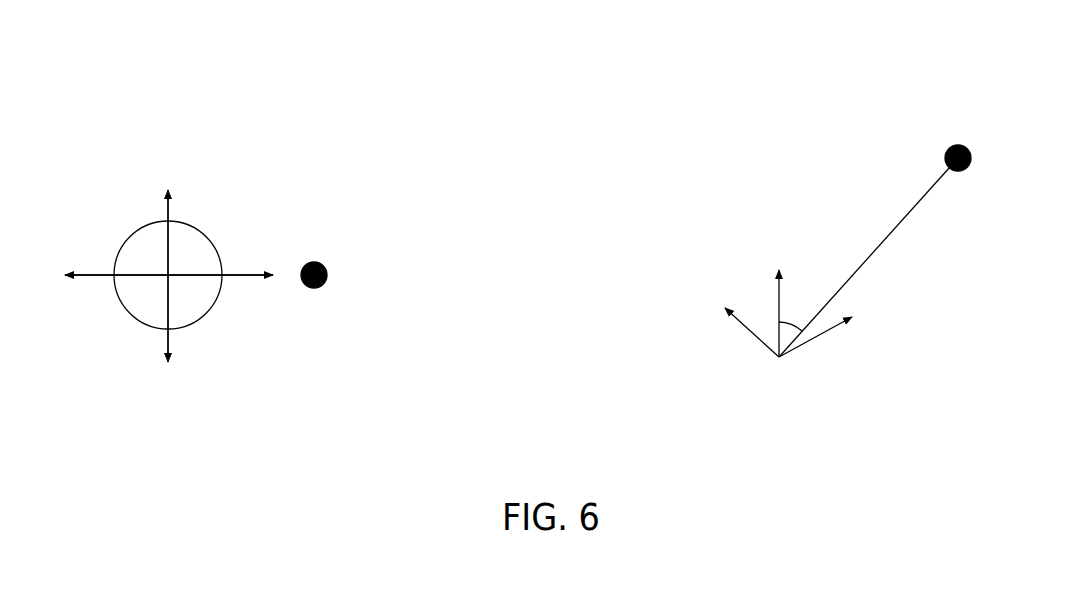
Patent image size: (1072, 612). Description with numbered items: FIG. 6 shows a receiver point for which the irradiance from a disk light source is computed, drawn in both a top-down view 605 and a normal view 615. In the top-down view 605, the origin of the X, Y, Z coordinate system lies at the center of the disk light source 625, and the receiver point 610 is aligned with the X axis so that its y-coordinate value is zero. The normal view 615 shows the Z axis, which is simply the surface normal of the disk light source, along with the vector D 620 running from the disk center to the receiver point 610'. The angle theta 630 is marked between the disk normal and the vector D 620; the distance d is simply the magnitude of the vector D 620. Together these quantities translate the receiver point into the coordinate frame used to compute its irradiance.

The top-down view 605 is at (215, 117).
The receiver point 610 is at (344, 249).
The receiver point 610' is at (989, 133).
The normal view 615 is at (842, 97).
The vector D 620 is at (885, 238).
The disk light source 625 is at (205, 235).
The angle theta 630 is at (808, 297).